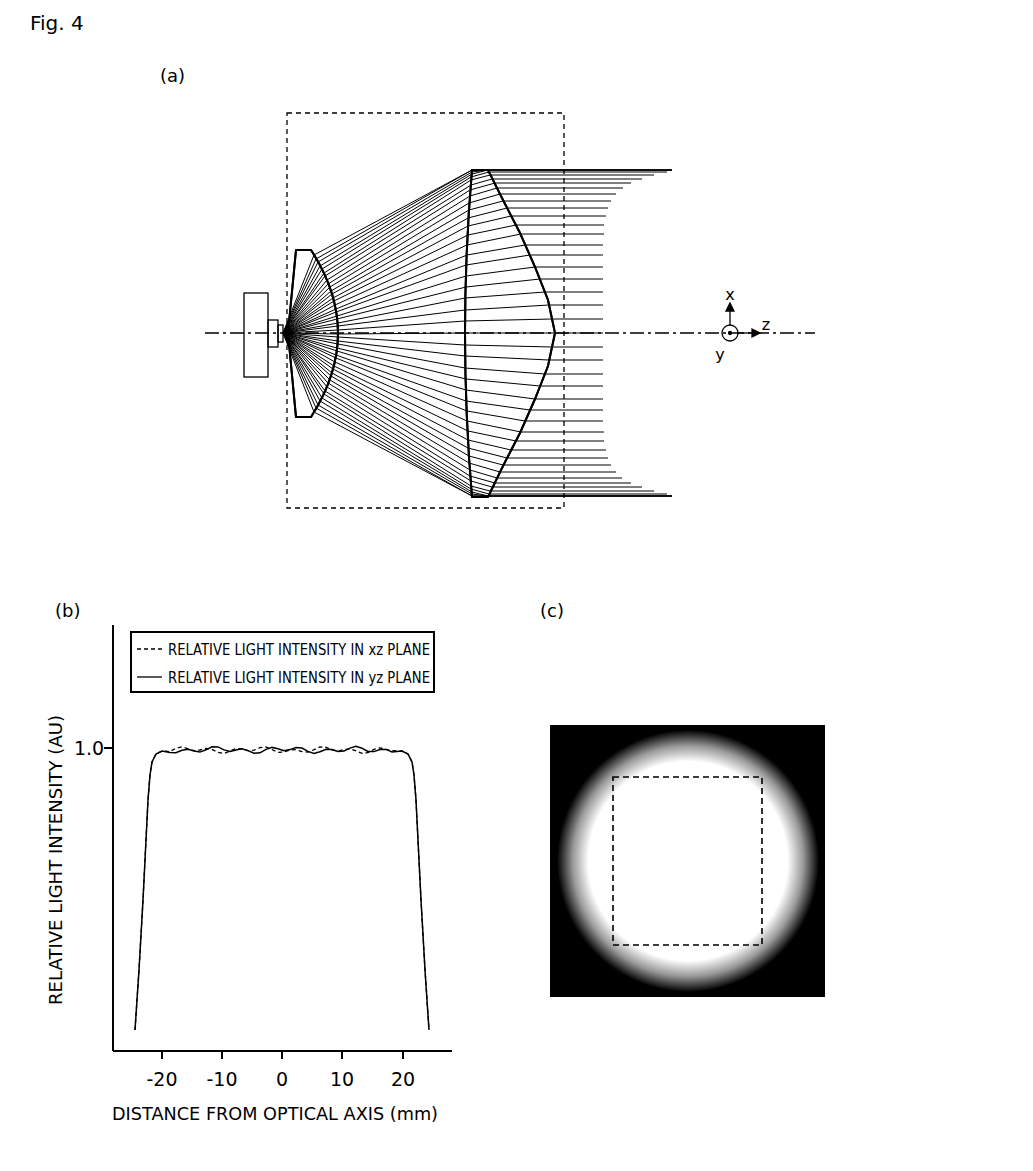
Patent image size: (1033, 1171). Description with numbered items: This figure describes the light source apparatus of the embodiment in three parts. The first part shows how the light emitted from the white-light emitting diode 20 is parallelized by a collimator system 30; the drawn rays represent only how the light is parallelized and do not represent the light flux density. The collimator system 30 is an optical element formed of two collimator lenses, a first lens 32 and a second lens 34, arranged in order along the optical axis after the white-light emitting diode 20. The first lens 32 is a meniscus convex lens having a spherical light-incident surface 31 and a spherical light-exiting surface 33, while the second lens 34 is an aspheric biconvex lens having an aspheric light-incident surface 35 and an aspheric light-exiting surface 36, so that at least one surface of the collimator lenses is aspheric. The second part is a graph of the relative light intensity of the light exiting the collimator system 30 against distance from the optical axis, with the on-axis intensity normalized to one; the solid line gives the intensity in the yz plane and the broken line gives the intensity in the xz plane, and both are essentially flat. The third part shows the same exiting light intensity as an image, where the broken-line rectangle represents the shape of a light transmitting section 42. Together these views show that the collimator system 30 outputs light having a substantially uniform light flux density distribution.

The white-light emitting diode 20 is at (277, 386).
The collimator system 30 is at (428, 509).
The spherical light-incident surface 31 is at (292, 407).
The first lens 32 is at (300, 248).
The spherical light-exiting surface 33 is at (318, 258).
The second lens 34 is at (478, 169).
The aspheric light-incident surface 35 is at (455, 212).
The aspheric light-exiting surface 36 is at (514, 200).
The light transmitting section 42 is at (677, 770).